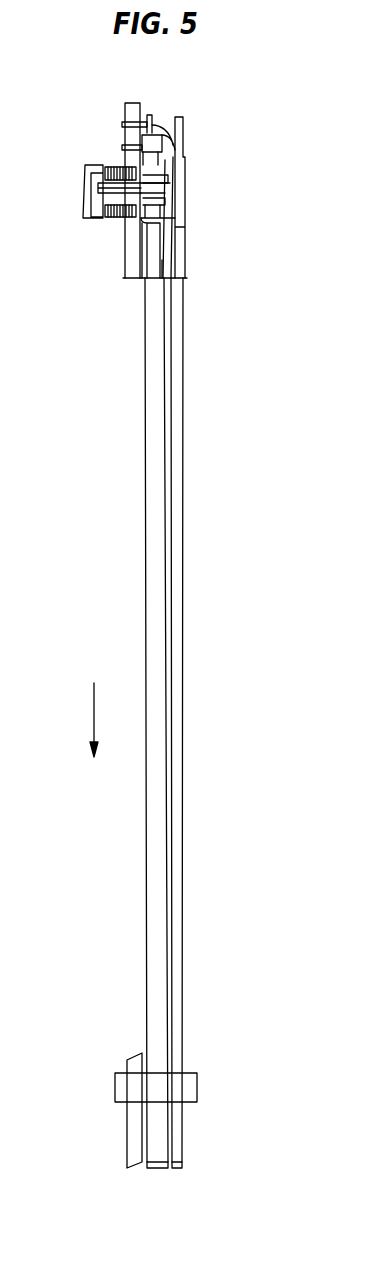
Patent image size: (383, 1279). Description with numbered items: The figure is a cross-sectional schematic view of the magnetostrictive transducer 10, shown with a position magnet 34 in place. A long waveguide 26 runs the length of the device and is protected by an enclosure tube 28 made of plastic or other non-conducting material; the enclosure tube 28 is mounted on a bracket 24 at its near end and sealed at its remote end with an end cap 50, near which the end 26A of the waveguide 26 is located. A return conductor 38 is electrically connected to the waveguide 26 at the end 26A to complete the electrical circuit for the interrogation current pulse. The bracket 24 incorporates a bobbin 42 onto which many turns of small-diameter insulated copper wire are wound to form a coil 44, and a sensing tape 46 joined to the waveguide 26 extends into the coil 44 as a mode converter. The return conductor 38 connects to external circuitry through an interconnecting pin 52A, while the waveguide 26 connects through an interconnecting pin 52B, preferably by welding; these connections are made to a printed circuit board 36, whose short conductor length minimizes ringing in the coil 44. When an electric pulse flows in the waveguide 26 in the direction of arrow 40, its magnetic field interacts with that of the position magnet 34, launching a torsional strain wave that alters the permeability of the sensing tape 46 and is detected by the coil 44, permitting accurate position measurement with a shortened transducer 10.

The magnetostrictive transducer 10 is at (230, 536).
The bracket 24 is at (185, 236).
The waveguide 26 is at (172, 622).
The end of waveguide 26A is at (173, 1168).
The enclosure tube 28 is at (184, 368).
The position magnet 34 is at (198, 1085).
The printed circuit board 36 is at (133, 280).
The return conductor 38 is at (168, 128).
The arrow 40 is at (92, 713).
The bobbin 42 is at (91, 221).
The coil 44 is at (110, 165).
The sensing tape 46 is at (163, 187).
The end cap 50 is at (150, 1168).
The interconnecting pin 52A is at (122, 122).
The interconnecting pin 52B is at (121, 147).